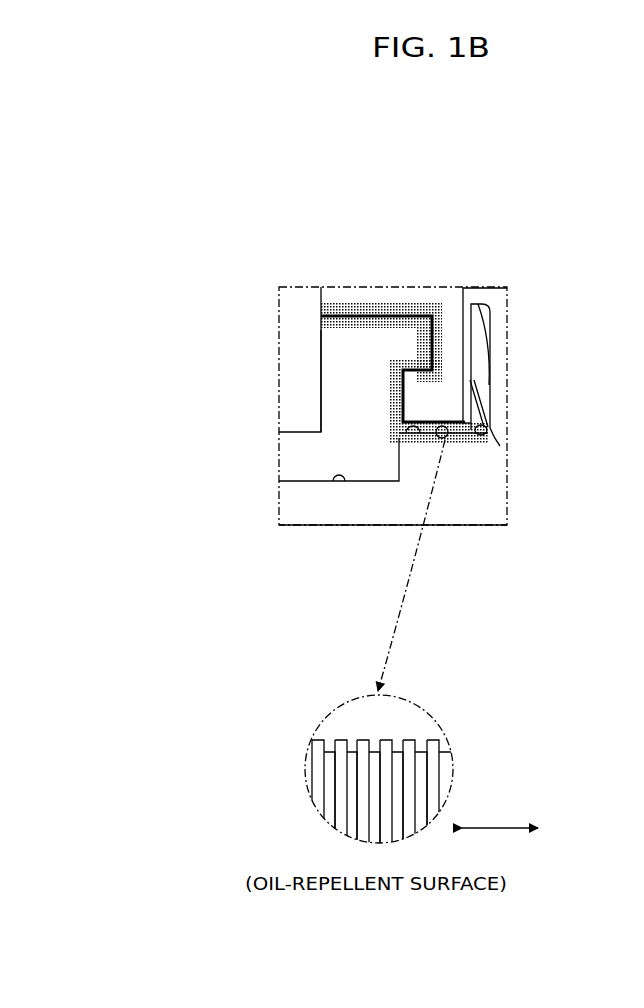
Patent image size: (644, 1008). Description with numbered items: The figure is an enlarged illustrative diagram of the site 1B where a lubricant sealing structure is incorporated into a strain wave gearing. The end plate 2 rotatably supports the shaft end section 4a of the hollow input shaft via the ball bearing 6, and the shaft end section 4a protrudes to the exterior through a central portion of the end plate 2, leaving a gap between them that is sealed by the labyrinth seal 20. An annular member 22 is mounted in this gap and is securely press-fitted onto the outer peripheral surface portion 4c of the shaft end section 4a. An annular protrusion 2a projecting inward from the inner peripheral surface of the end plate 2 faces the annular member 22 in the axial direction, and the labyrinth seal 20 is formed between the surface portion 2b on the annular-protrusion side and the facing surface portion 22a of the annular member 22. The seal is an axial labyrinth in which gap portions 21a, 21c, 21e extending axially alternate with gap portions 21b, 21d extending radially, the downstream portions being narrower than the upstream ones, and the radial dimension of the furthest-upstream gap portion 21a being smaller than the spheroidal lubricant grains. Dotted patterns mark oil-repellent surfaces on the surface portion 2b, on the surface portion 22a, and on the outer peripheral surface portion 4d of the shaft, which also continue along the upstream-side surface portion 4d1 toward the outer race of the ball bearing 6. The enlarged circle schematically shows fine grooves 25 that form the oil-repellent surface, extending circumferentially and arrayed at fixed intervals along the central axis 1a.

The site 1B is at (311, 283).
The end plate 2 is at (409, 334).
The annular protrusion 2a is at (441, 359).
The surface portion 2b is at (426, 347).
The shaft end section 4a is at (470, 514).
The outer peripheral surface portion 4c is at (338, 483).
The outer peripheral surface portion 4d is at (399, 440).
The outer peripheral surface portion 4d1 is at (497, 437).
The ball bearing 6 is at (499, 290).
The labyrinth seal 20 is at (550, 366).
The gap portion 21a is at (520, 432).
The gap portion 21b is at (470, 401).
The gap portion 21c is at (470, 382).
The gap portion 21d is at (464, 340).
The gap portion 21e is at (471, 323).
The annular member 22 is at (338, 361).
The surface portion 22a is at (403, 399).
The fine grooves 25 is at (352, 750).
The central axis 1a is at (500, 815).